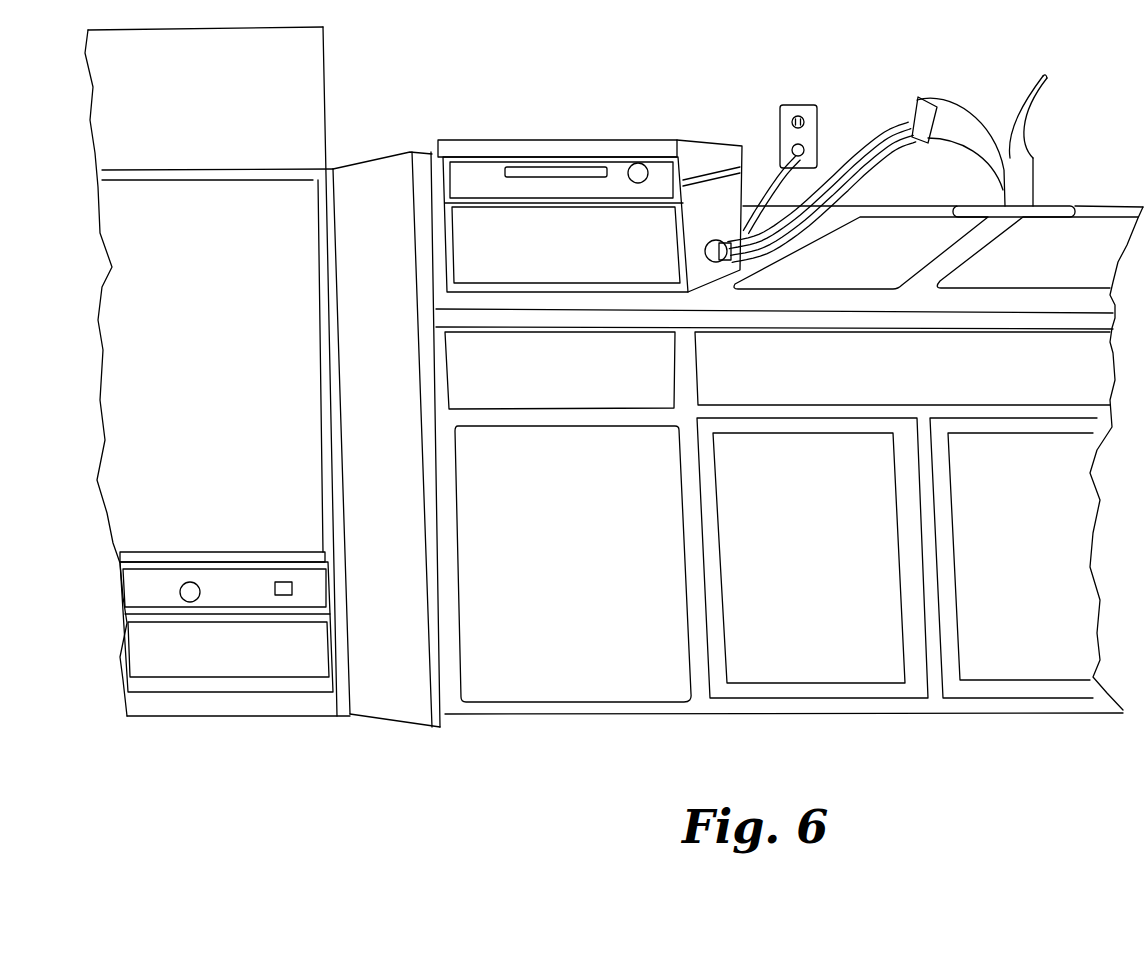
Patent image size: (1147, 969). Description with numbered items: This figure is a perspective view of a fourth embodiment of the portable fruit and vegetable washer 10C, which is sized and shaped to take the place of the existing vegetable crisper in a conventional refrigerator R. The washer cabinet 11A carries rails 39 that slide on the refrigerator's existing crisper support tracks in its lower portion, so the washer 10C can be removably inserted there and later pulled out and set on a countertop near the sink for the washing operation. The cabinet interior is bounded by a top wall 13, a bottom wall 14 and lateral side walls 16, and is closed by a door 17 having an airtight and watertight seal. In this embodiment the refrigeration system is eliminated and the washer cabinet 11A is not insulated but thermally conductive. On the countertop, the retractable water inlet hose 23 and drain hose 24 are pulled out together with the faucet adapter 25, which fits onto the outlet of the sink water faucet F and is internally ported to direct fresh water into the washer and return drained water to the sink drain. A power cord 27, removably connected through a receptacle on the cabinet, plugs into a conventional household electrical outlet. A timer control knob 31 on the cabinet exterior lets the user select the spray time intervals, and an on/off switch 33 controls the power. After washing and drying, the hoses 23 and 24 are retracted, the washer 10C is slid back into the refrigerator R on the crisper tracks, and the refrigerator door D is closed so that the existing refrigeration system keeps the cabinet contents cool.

The refrigerator R is at (328, 126).
The refrigerator door D is at (393, 681).
The sink water faucet F is at (1042, 153).
The portable fruit and vegetable washer 10C is at (566, 119).
The washer cabinet 11A is at (704, 163).
The top wall 13 is at (480, 140).
The bottom wall 14 is at (703, 283).
The lateral side wall 16 is at (727, 227).
The door 17 is at (552, 254).
The water inlet hose 23 is at (880, 124).
The drain hose 24 is at (876, 148).
The faucet adapter 25 is at (930, 143).
The power cord 27 is at (775, 190).
The timer control knob 31 is at (637, 162).
The on/off switch 33 is at (283, 597).
The rails 39 is at (703, 183).